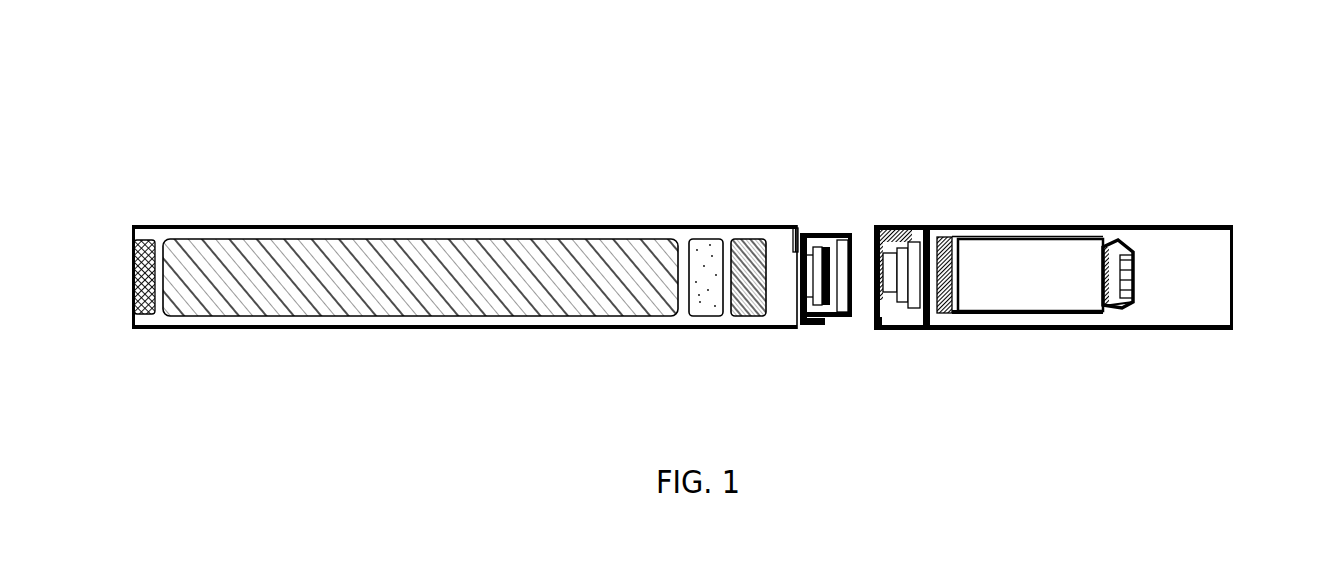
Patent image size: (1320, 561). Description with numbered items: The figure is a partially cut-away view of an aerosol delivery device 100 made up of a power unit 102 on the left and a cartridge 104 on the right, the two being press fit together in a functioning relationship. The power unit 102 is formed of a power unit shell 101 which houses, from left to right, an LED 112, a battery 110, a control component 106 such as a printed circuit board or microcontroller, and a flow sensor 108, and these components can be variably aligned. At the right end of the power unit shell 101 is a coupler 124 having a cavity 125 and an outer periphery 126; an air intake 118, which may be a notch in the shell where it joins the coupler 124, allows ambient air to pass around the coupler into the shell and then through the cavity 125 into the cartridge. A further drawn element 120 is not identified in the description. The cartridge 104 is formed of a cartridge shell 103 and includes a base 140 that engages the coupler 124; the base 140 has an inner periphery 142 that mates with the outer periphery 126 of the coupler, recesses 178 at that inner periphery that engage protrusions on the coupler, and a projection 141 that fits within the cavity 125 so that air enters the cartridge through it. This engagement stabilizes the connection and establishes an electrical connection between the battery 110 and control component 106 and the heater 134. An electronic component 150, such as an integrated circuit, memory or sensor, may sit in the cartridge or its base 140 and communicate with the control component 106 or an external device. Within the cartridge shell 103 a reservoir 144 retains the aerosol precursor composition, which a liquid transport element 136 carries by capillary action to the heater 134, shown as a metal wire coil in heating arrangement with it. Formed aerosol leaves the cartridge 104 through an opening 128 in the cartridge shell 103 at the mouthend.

The aerosol delivery device 100 is at (165, 116).
The power unit 102 is at (165, 192).
The cartridge 104 is at (1040, 193).
The power unit shell 101 is at (253, 329).
The cartridge shell 103 is at (1005, 322).
The LED 112 is at (141, 316).
The battery 110 is at (370, 316).
The control component 106 is at (706, 316).
The flow sensor 108 is at (745, 316).
The air intake 118 is at (795, 228).
The connector frame 120 is at (808, 320).
The coupler 124 is at (843, 318).
The cavity 125 is at (822, 233).
The outer periphery 126 is at (842, 233).
The inner periphery 142 is at (867, 238).
The projection 141 is at (917, 232).
The base 140 is at (907, 330).
The recesses 178 is at (895, 330).
The electronic component 150 is at (949, 330).
The reservoir 144 is at (1068, 314).
The heater 134 is at (1134, 293).
The liquid transport element 136 is at (1121, 309).
The opening 128 is at (1229, 272).